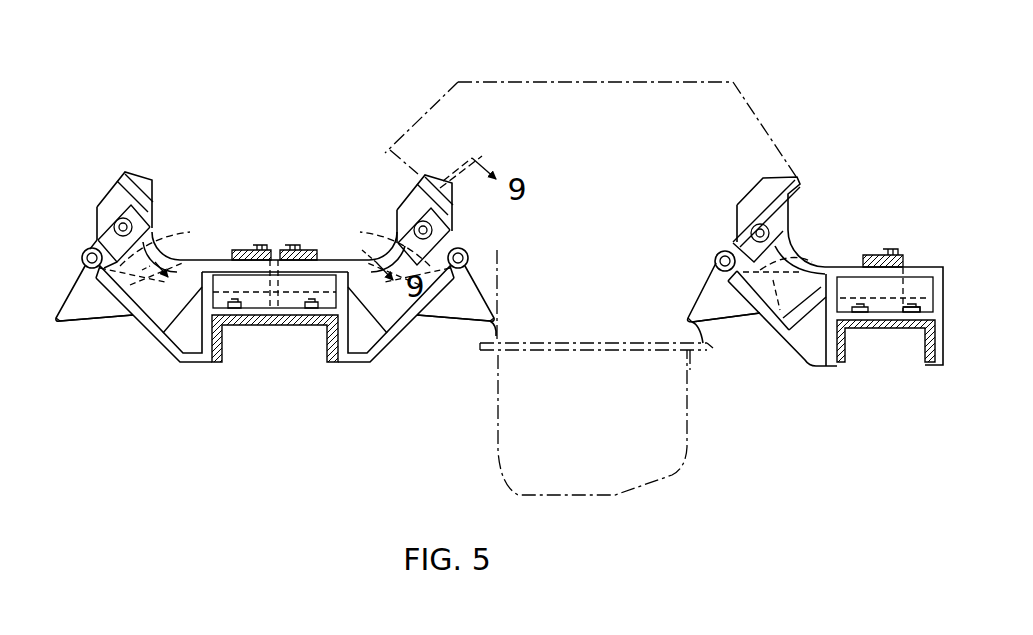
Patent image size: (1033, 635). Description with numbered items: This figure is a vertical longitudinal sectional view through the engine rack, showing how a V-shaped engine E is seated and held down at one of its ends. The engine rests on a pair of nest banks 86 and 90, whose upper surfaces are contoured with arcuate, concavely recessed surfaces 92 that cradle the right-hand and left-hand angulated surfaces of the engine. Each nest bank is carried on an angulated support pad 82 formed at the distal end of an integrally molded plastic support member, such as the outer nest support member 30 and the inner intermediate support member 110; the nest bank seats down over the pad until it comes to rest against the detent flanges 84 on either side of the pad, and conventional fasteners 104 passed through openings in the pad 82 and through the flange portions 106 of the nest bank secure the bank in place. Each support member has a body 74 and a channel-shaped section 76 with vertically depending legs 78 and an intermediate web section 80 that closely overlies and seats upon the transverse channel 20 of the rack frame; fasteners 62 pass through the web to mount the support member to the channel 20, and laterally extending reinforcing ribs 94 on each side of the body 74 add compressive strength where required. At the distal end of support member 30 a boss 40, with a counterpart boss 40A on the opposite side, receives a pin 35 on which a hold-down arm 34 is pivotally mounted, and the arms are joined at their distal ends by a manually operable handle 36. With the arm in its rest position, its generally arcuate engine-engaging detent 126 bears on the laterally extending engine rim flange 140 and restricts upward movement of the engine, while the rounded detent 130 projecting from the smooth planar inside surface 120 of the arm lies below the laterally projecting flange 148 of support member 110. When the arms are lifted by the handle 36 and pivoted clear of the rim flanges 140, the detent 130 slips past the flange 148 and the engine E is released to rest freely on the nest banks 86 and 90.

The engine E is at (575, 80).
The intermediate transverse rail 20 is at (286, 325).
The outer nest support member 30 is at (806, 248).
The hold-down arm 34 is at (112, 322).
The pin 35 is at (729, 254).
The handle 36 is at (247, 250).
The boss 40 is at (82, 258).
The pivot pin 40A is at (470, 258).
The fastener 62 is at (905, 306).
The body 74 is at (812, 322).
The channel-shaped section 76 is at (250, 322).
The vertically depending leg 78 is at (822, 344).
The intermediate web section 80 is at (900, 313).
The nest bank support pad 82 is at (770, 186).
The nest bank detent flange 84 is at (100, 246).
The nest bank 86 is at (115, 170).
The nest bank 90 is at (435, 176).
The concavely recessed surface 92 is at (135, 178).
The reinforcing rib 94 is at (192, 300).
The fastener 104 is at (120, 224).
The flange portion 106 is at (100, 236).
The inner intermediate support member 110 is at (150, 339).
The inside surface 120 is at (76, 284).
The engine-engaging detent 126 is at (63, 320).
The rounded detent 130 is at (172, 247).
The engine rim flange 140 is at (509, 373).
The laterally projecting flange 148 is at (165, 258).